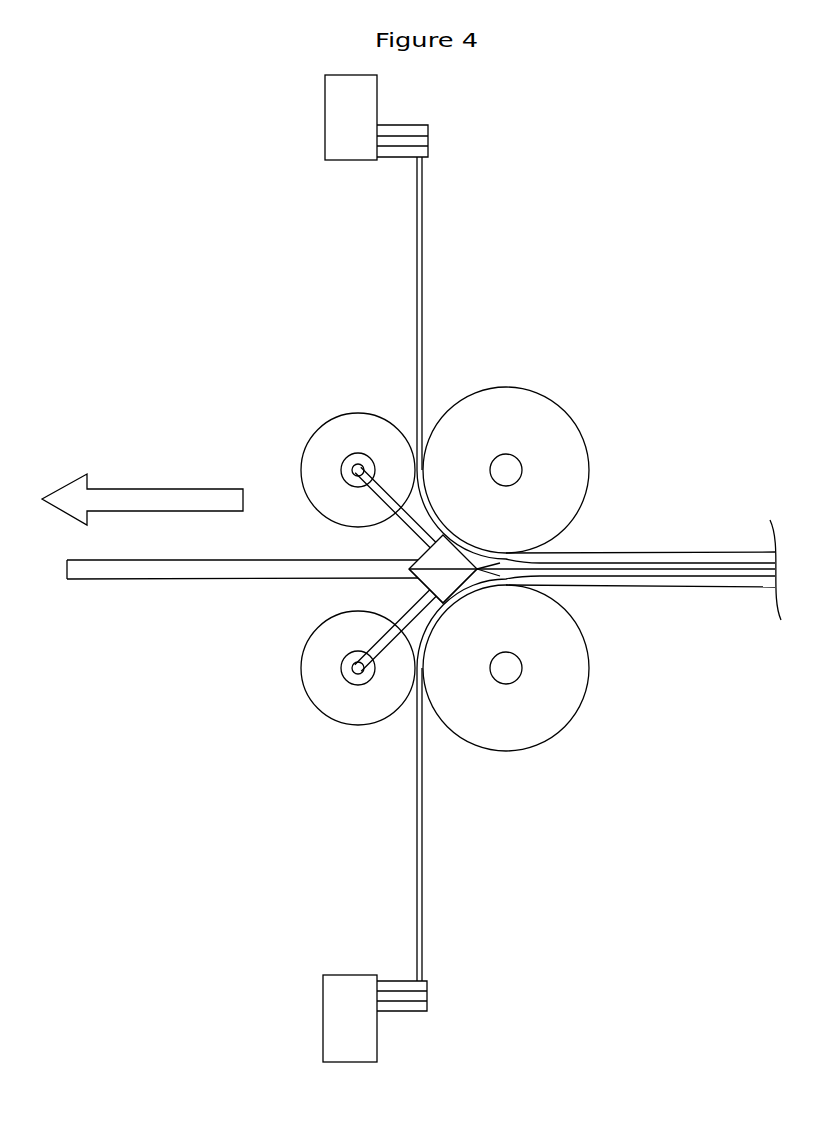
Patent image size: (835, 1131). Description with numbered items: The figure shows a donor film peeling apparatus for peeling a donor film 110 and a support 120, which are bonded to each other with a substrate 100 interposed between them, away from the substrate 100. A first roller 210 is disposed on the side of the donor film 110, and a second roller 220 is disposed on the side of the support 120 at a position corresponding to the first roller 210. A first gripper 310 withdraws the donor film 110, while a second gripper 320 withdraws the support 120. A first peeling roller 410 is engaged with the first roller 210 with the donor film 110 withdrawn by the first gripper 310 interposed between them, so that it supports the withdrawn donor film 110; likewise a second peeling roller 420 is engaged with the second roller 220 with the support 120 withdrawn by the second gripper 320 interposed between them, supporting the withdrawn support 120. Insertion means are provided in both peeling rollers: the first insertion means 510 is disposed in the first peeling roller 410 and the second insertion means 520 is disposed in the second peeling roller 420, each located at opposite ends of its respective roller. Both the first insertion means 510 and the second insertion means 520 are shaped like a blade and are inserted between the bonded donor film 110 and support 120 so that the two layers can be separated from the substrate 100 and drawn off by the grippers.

The substrate 100 is at (120, 570).
The donor film 110 is at (423, 295).
The support 120 is at (423, 838).
The first roller 210 is at (556, 428).
The second roller 220 is at (575, 662).
The first gripper 310 is at (337, 112).
The second gripper 320 is at (338, 1025).
The first peeling roller 410 is at (330, 440).
The second peeling roller 420 is at (325, 700).
The first insertion means 510 is at (440, 555).
The second insertion means 520 is at (447, 590).